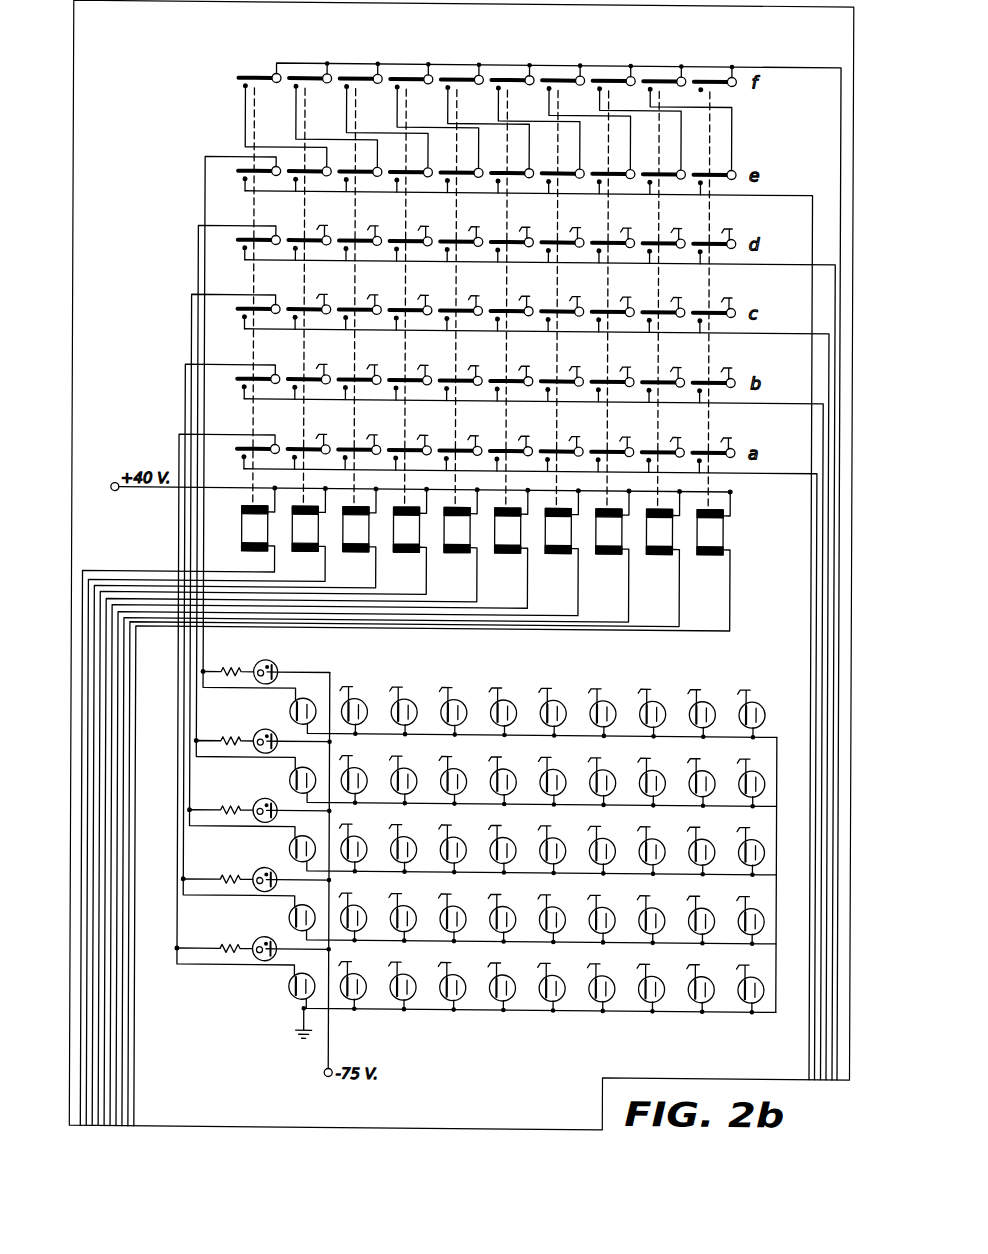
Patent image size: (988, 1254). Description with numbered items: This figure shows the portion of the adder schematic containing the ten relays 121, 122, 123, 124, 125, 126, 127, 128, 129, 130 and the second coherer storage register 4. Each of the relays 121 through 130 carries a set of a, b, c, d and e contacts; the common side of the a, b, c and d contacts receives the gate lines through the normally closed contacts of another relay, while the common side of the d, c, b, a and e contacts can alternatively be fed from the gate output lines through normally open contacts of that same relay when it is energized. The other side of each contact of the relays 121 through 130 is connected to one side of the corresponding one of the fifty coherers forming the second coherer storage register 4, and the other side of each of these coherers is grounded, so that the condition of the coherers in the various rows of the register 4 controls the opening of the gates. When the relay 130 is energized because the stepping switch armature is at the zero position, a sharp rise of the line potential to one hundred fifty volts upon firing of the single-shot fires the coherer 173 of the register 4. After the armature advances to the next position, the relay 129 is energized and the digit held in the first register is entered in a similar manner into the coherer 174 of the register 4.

The relay 121 is at (250, 541).
The relay 122 is at (301, 541).
The relay 123 is at (351, 541).
The relay 124 is at (402, 541).
The relay 125 is at (452, 541).
The relay 126 is at (503, 541).
The relay 127 is at (554, 541).
The relay 128 is at (604, 541).
The relay 129 is at (655, 541).
The relay 130 is at (705, 541).
The coherer 173 is at (771, 823).
The coherer 174 is at (722, 823).
The second coherer storage register 4 is at (498, 1036).